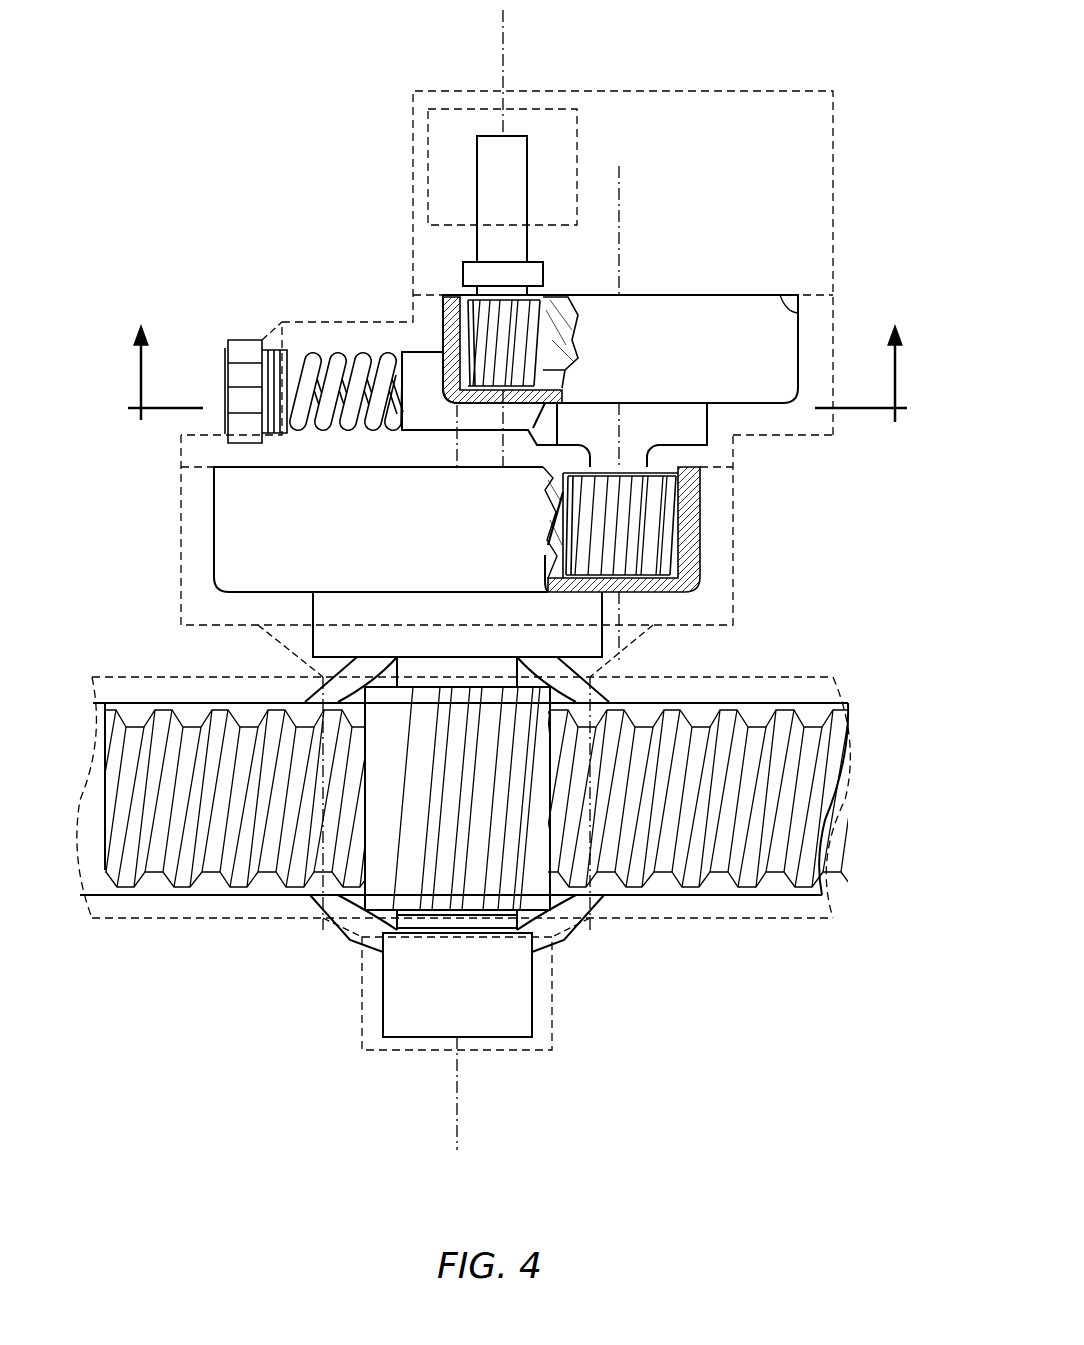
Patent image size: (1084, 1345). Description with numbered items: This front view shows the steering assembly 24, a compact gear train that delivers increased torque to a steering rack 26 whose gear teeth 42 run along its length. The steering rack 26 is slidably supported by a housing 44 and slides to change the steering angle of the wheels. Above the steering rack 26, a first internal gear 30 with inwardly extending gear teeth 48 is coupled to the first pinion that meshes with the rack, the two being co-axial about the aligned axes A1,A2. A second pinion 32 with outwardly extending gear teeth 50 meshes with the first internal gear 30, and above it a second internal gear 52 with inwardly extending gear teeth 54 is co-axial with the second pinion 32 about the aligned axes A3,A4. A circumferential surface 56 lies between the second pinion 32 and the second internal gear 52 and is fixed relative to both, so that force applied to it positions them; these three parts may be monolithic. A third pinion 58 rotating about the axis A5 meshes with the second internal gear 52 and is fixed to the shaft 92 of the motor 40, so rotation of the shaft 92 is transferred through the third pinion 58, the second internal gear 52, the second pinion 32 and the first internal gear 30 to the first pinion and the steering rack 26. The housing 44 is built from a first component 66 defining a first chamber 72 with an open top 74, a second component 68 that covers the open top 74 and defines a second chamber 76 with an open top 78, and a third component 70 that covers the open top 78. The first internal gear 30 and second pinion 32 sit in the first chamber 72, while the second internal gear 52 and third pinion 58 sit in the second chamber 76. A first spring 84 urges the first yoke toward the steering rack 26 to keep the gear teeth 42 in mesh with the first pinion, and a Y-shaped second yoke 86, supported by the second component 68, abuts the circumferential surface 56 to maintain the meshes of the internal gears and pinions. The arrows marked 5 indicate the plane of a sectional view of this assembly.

The steering assembly 24 is at (222, 168).
The steering rack 26 is at (135, 715).
The first internal gear 30 is at (690, 497).
The second pinion 32 is at (645, 553).
The motor 40 is at (428, 128).
The gear teeth 42 is at (230, 830).
The housing 44 is at (152, 538).
The gear teeth 48 is at (552, 540).
The gear teeth 50 is at (527, 345).
The second internal gear 52 is at (455, 303).
The gear teeth 54 is at (562, 316).
The circumferential surface 56 is at (690, 410).
The third pinion 58 is at (482, 323).
The first component 66 is at (736, 496).
The second component 68 is at (835, 428).
The third component 70 is at (836, 122).
The first chamber 72 is at (548, 507).
The open top 74 is at (232, 467).
The second chamber 76 is at (770, 352).
The open top 78 is at (782, 296).
The first spring 84 is at (313, 362).
The second yoke 86 is at (415, 362).
The shaft 92 is at (528, 238).
The section line 5 is at (520, 374).
The axis A5 is at (503, 47).
The axes A3,A4 is at (620, 213).
The axes A1,A2 is at (457, 1112).